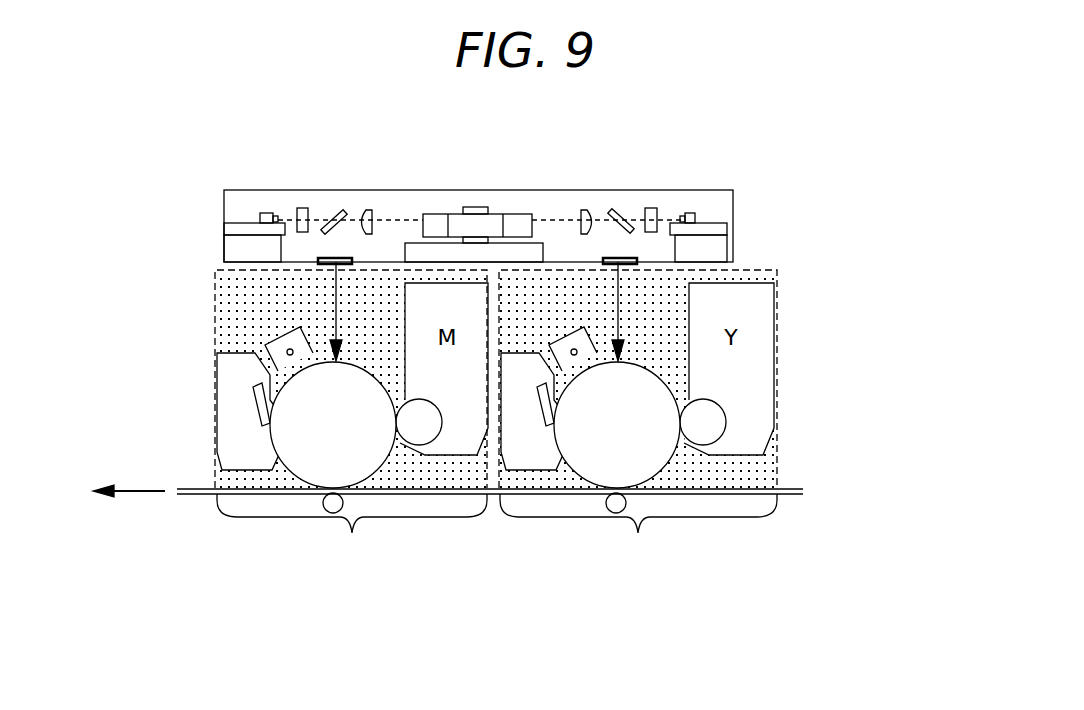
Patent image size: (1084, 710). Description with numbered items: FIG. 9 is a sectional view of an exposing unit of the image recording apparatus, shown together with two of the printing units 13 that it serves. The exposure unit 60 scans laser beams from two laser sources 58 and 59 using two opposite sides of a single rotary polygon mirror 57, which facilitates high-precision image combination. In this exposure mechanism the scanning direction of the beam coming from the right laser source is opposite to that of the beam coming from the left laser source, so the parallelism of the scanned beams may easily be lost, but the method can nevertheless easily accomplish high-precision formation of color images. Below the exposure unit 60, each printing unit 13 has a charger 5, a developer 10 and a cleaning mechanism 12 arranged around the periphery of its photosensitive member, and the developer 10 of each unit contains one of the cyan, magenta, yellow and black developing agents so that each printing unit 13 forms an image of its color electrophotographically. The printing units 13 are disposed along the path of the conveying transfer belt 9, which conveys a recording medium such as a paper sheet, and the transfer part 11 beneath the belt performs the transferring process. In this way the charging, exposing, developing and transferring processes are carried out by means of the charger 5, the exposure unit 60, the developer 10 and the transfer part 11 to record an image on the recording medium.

The charger 5 is at (590, 340).
The conveying transfer belt 9 is at (790, 494).
The developer 10 is at (713, 417).
The transfer part 11 is at (643, 517).
The cleaning mechanism 12 is at (530, 455).
The printing unit 13 is at (352, 533).
The rotary polygon mirror 57 is at (473, 207).
The laser source 58 is at (268, 211).
The laser source 59 is at (692, 213).
The exposure unit 60 is at (604, 190).